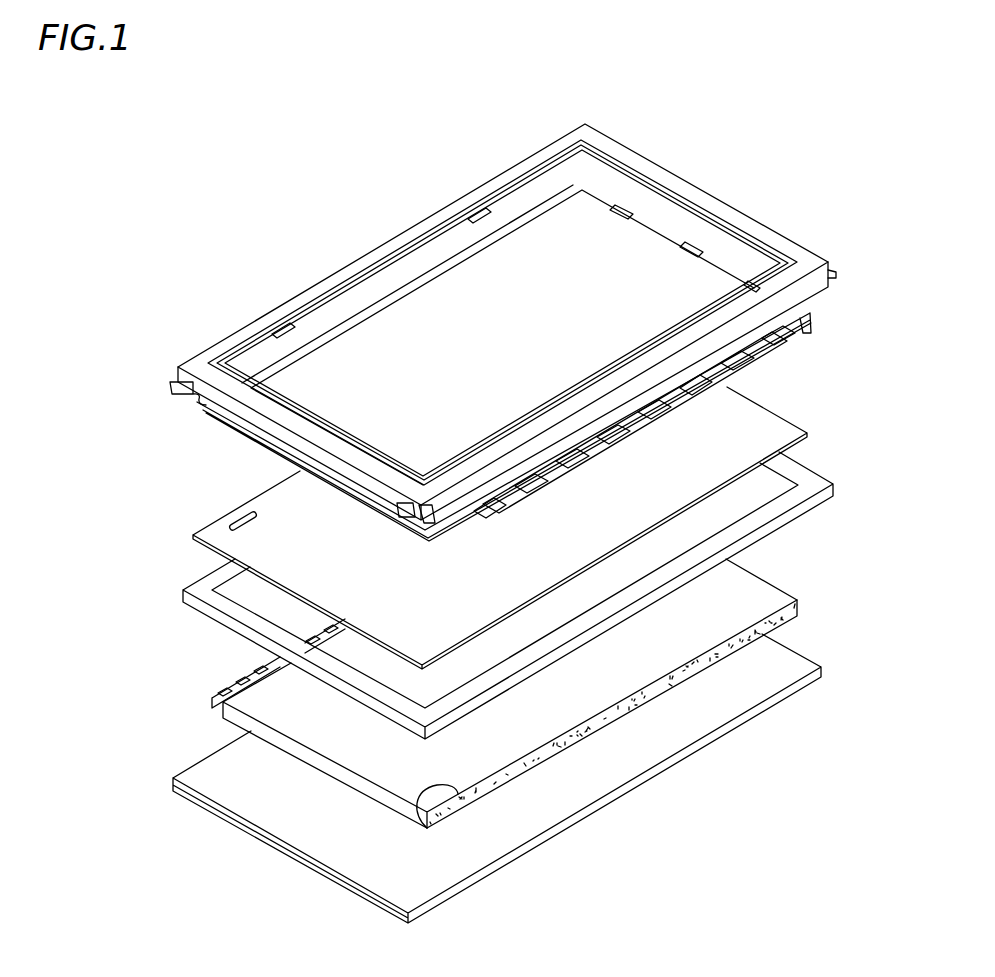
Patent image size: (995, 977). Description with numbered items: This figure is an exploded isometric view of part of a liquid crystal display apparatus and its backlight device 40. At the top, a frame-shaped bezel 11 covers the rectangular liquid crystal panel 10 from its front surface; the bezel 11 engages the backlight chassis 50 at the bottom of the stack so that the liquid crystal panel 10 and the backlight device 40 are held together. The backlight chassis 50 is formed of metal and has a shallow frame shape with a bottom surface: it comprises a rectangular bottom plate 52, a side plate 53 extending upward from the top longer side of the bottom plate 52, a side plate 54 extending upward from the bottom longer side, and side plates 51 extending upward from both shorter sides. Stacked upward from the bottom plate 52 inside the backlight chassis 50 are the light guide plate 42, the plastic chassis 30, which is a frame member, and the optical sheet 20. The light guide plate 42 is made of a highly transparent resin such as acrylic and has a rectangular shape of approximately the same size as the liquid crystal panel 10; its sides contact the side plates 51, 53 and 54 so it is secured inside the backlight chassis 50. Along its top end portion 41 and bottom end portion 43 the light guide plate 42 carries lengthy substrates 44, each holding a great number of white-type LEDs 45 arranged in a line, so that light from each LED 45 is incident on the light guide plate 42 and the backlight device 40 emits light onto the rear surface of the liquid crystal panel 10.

The liquid crystal panel 10 is at (397, 323).
The bezel 11 is at (483, 190).
The optical sheet 20 is at (210, 527).
The plastic chassis 30 is at (212, 576).
The backlight device 40 is at (142, 500).
The top end portion 41 is at (253, 657).
The light guide plate 42 is at (243, 700).
The bottom end portion 43 is at (420, 838).
The lengthy substrate 44 is at (212, 703).
The LED 45 is at (715, 663).
The backlight chassis 50 is at (502, 762).
The side plate 51 is at (313, 865).
The bottom plate 52 is at (478, 843).
The side plate 53 is at (207, 760).
The side plate 54 is at (643, 778).